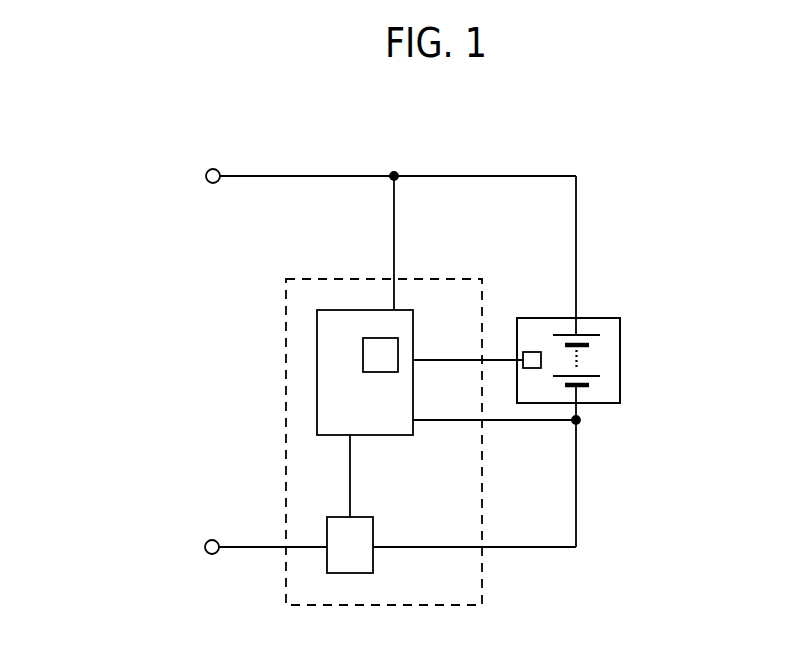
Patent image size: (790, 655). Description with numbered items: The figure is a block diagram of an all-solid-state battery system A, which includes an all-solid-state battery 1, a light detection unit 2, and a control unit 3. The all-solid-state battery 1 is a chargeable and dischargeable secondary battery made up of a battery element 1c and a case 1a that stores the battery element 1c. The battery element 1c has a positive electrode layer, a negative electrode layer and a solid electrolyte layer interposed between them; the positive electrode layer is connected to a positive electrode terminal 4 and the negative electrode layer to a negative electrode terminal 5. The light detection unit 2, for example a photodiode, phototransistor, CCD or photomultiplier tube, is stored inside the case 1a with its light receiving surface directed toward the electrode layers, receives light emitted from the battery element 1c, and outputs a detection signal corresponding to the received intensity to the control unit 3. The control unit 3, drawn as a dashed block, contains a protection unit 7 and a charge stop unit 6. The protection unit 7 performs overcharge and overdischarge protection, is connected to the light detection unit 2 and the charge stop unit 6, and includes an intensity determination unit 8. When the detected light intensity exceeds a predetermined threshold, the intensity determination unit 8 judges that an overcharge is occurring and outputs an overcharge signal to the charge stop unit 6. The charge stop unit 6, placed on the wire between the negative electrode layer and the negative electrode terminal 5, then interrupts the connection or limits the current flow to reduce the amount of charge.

The all-solid-state battery system A is at (108, 138).
The all-solid-state battery 1 is at (668, 266).
The case 1a is at (613, 318).
The battery element 1c is at (600, 359).
The light detection unit 2 is at (533, 352).
The control unit 3 is at (455, 279).
The positive electrode terminal 4 is at (213, 169).
The negative electrode terminal 5 is at (212, 540).
The charge stop unit 6 is at (374, 527).
The protection unit 7 is at (330, 310).
The intensity determination unit 8 is at (372, 338).